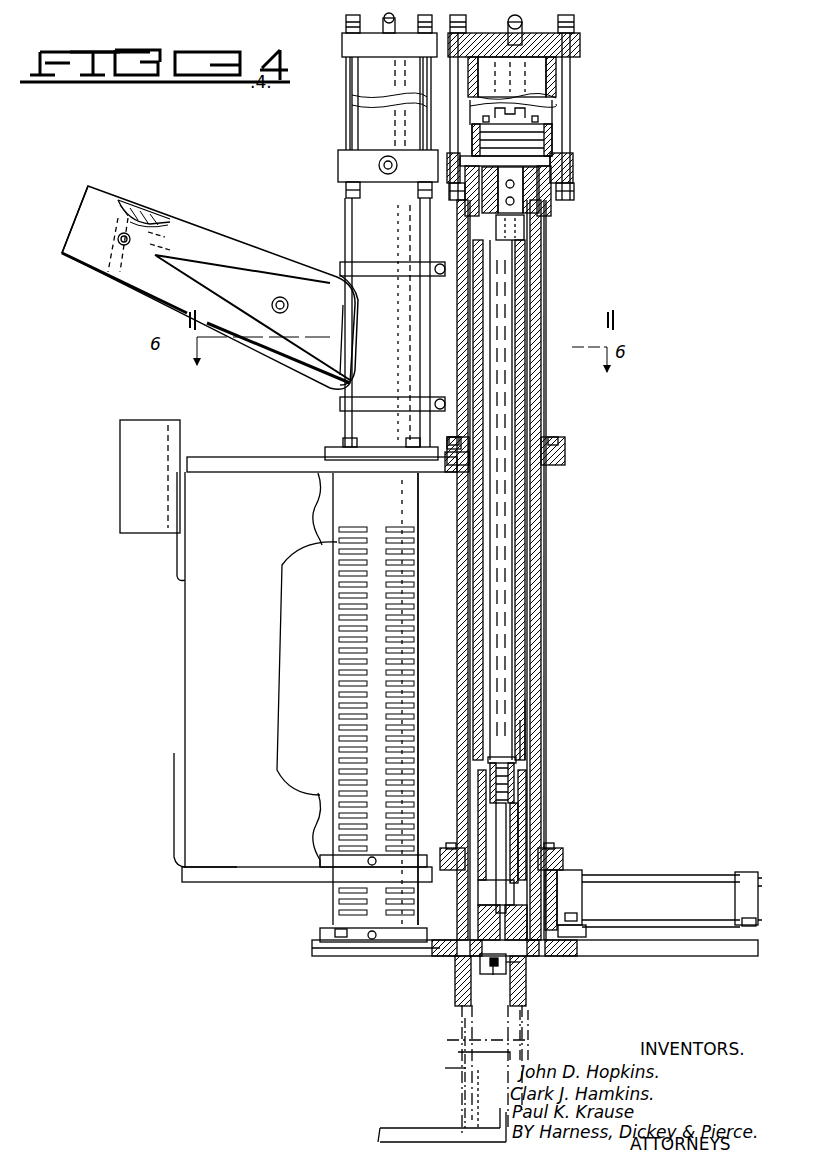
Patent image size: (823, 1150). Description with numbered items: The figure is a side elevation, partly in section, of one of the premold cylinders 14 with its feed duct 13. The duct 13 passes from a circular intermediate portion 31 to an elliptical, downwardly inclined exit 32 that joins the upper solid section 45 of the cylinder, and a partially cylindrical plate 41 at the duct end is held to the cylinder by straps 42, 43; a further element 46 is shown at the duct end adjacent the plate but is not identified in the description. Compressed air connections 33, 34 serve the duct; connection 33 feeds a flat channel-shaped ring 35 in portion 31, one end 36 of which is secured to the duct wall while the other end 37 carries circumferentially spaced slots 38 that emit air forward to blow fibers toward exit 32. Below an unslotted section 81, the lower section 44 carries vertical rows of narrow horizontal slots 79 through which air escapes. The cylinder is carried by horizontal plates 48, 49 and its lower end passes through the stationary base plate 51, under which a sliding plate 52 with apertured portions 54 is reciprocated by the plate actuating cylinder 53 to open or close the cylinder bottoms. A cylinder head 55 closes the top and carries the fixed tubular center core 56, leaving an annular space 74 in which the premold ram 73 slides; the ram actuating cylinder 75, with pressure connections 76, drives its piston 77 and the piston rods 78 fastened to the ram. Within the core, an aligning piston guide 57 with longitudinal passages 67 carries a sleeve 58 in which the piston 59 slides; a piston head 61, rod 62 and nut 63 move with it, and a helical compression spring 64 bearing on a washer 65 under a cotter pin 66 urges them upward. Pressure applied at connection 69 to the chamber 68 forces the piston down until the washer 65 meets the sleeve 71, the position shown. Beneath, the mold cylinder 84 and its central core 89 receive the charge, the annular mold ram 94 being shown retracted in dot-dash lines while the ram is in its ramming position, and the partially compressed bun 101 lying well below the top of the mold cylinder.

The duct 13 is at (243, 243).
The premold cylinder 14 is at (548, 528).
The intermediate portion of duct 31 is at (88, 250).
The exit of duct 32 is at (340, 352).
The compressed air connection 33 is at (124, 250).
The compressed air connection 34 is at (289, 308).
The ring 35 is at (142, 212).
The end of ring 36 is at (128, 207).
The other end of ring 37 is at (165, 218).
The slots 38 is at (150, 213).
The partially cylindrical plate 41 is at (405, 348).
The strap 42 is at (340, 267).
The strap 43 is at (330, 414).
The lower slotted section 44 is at (541, 668).
The upper solid section 45 is at (553, 330).
The arm boss 46 is at (358, 320).
The horizontal plate 48 is at (230, 462).
The horizontal plate 49 is at (252, 868).
The stationary base plate 51 is at (668, 958).
The sliding plate 52 is at (445, 957).
The plate actuating cylinder 53 is at (655, 883).
The apertured portions 54 is at (462, 968).
The cylinder head 55 is at (580, 163).
The fixed center core 56 is at (540, 265).
The aligning piston guide 57 is at (522, 800).
The sleeve 58 is at (520, 896).
The piston 59 is at (528, 958).
The piston head 61 is at (516, 968).
The rod 62 is at (505, 860).
The nut 63 is at (493, 976).
The helical compression spring 64 is at (515, 762).
The washer 65 is at (523, 732).
The cotter pin 66 is at (525, 714).
The longitudinal passages 67 is at (516, 835).
The chamber 68 is at (505, 618).
The connection 69 is at (514, 202).
The sleeve 71 is at (514, 790).
The premold ram 73 is at (470, 1005).
The annular space 74 is at (545, 420).
The premold ram actuating cylinder 75 is at (556, 84).
The pressure connections 76 is at (346, 24).
The actuating piston 77 is at (553, 140).
The piston rods 78 is at (545, 297).
The slots 79 is at (346, 638).
The unslotted section 81 is at (352, 488).
The mold cylinder 84 is at (445, 1070).
The central core 89 is at (470, 1025).
The annular ram 94 is at (462, 1090).
The bun 101 is at (458, 1040).